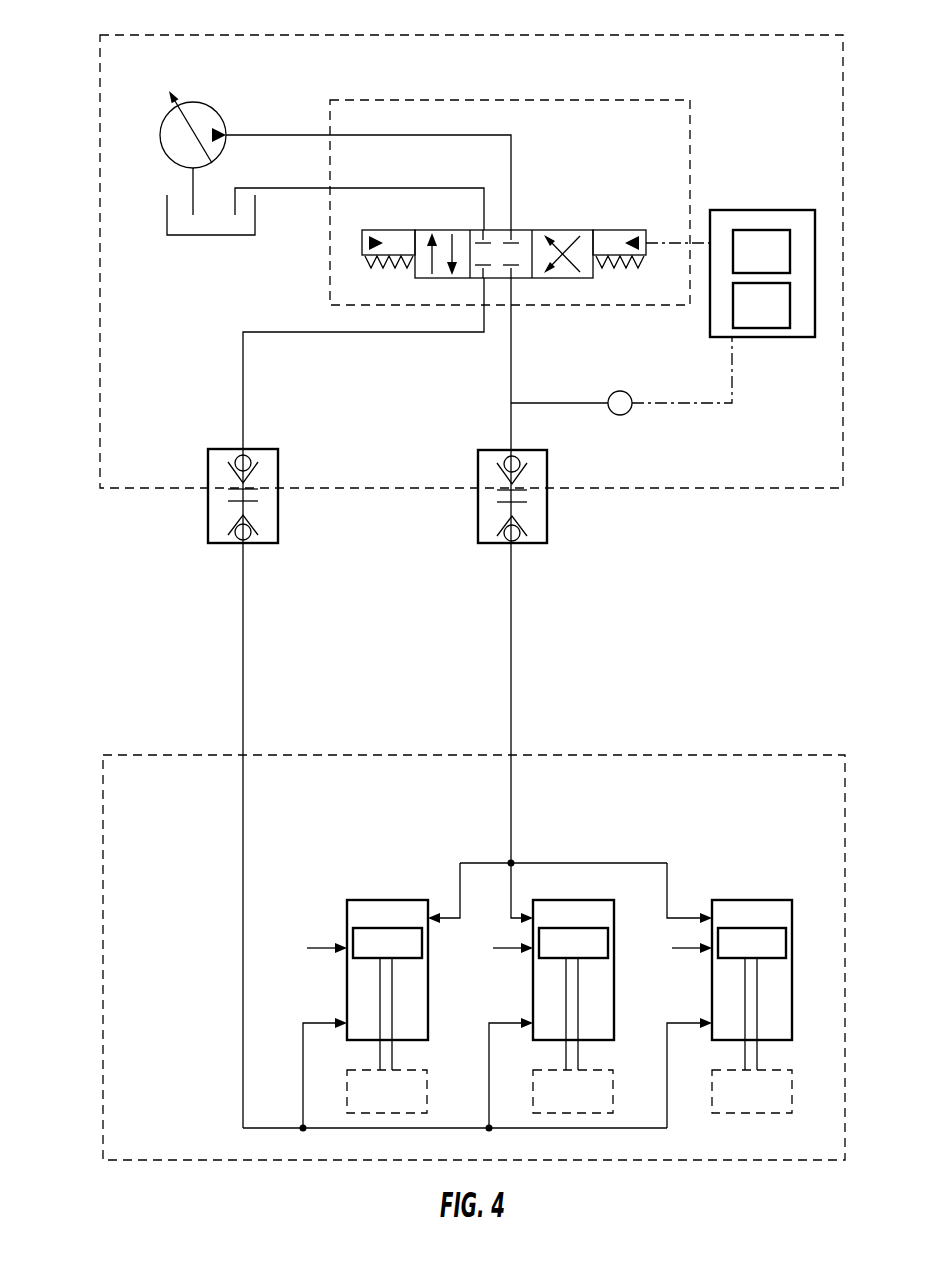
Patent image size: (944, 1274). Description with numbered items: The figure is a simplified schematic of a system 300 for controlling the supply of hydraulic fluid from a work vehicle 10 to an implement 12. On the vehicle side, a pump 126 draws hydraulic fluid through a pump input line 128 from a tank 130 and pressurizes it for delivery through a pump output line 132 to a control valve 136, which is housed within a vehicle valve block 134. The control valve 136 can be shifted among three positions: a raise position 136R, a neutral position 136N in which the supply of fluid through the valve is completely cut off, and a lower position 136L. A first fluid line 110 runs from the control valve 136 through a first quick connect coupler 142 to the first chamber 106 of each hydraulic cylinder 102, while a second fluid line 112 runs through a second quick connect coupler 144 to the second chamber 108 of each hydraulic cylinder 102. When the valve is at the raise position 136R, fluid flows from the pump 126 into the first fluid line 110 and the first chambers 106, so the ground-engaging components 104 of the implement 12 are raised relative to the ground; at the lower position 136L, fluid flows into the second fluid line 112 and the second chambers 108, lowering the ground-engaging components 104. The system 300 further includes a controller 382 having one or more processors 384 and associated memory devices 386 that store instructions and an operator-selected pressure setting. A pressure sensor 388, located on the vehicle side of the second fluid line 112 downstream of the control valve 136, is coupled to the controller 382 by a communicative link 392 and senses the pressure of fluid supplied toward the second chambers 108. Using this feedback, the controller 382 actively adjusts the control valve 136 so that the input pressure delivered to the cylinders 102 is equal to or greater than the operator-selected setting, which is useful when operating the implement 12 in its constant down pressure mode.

The hydraulic system 10 is at (92, 64).
The implement 12 is at (96, 804).
The hydraulic cylinder 102 is at (493, 949).
The ground-engaging component 104 is at (405, 1070).
The first chamber 106 is at (415, 1003).
The second chamber 108 is at (398, 883).
The first fluid line 110 is at (335, 333).
The second fluid line 112 is at (511, 333).
The pump 126 is at (205, 104).
The pump input line 128 is at (190, 182).
The tank 130 is at (190, 236).
The pump output line 132 is at (385, 135).
The vehicle valve block 134 is at (653, 96).
The control valve 136 is at (608, 224).
The lower position 136L is at (446, 230).
The neutral position 136N is at (524, 230).
The raise position 136R is at (538, 230).
The first quick connect coupler 142 is at (278, 522).
The second quick connect coupler 144 is at (547, 508).
The system 300 is at (82, 553).
The controller 382 is at (757, 202).
The processor 384 is at (777, 264).
The memory device 386 is at (777, 317).
The pressure sensor 388 is at (628, 392).
The communicative link 392 is at (683, 404).